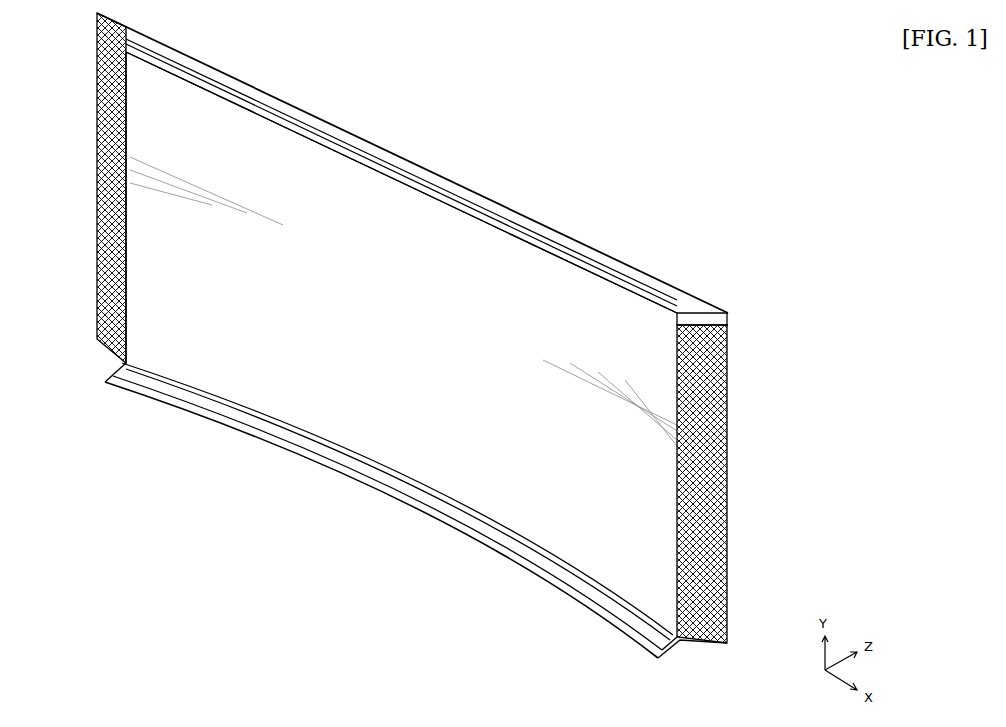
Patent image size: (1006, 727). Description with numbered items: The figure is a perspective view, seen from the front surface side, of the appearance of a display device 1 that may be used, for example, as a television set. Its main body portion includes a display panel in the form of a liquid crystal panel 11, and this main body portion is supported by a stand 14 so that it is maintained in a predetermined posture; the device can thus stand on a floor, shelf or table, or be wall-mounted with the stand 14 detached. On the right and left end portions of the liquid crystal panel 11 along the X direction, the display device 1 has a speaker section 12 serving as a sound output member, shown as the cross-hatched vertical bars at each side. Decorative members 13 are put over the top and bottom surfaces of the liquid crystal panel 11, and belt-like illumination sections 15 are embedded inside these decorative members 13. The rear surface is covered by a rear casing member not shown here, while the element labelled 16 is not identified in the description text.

The display device 1 is at (745, 192).
The liquid crystal panel 11 is at (232, 105).
The speaker section 12 is at (97, 148).
The decorative members 13 is at (500, 205).
The stand 14 is at (632, 634).
The illumination sections 15 is at (386, 478).
The upper frame edge 16 is at (388, 160).